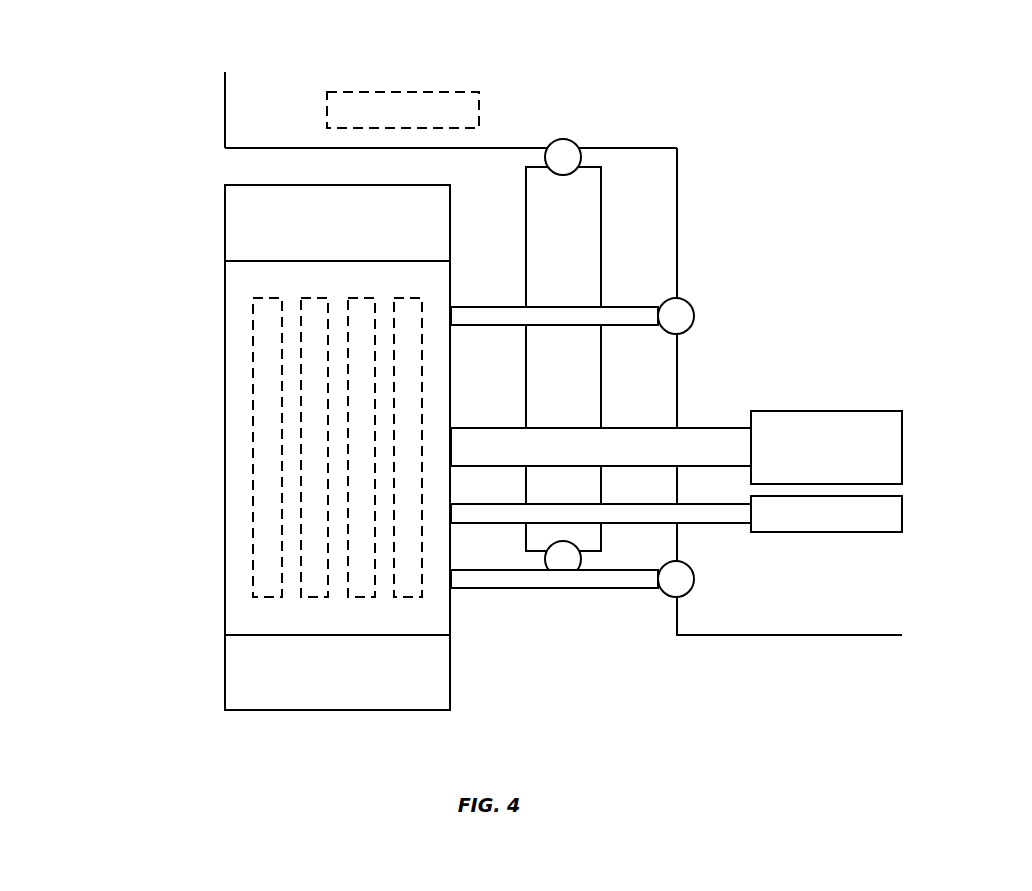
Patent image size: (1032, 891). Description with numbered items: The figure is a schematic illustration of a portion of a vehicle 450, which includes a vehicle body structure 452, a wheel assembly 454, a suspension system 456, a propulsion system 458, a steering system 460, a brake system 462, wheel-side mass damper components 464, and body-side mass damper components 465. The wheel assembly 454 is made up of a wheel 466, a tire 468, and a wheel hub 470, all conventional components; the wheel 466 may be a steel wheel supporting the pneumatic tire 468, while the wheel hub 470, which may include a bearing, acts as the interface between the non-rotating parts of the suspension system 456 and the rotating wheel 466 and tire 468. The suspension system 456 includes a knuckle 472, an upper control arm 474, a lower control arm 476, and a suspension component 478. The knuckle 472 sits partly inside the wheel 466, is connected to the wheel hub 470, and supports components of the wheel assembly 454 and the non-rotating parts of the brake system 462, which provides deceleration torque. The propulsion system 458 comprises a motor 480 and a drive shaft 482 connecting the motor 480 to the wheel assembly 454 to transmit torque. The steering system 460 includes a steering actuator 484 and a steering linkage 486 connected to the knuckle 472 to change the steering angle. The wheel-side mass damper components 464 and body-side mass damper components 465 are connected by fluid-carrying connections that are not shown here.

The vehicle 450 is at (104, 69).
The vehicle body structure 452 is at (225, 108).
The wheel assembly 454 is at (142, 184).
The suspension system 456 is at (702, 258).
The propulsion system 458 is at (829, 456).
The steering system 460 is at (893, 549).
The brake system 462 is at (301, 317).
The wheel-side mass damper components 464 is at (348, 522).
The body-side mass damper components 465 is at (327, 110).
The wheel 466 is at (225, 607).
The tire 468 is at (225, 672).
The wheel hub 470 is at (253, 360).
The knuckle 472 is at (394, 560).
The upper control arm 474 is at (643, 307).
The lower control arm 476 is at (628, 588).
The suspension component 478 is at (601, 387).
The motor 480 is at (818, 411).
The drive shaft 482 is at (489, 428).
The steering actuator 484 is at (815, 533).
The steering linkage 486 is at (487, 523).